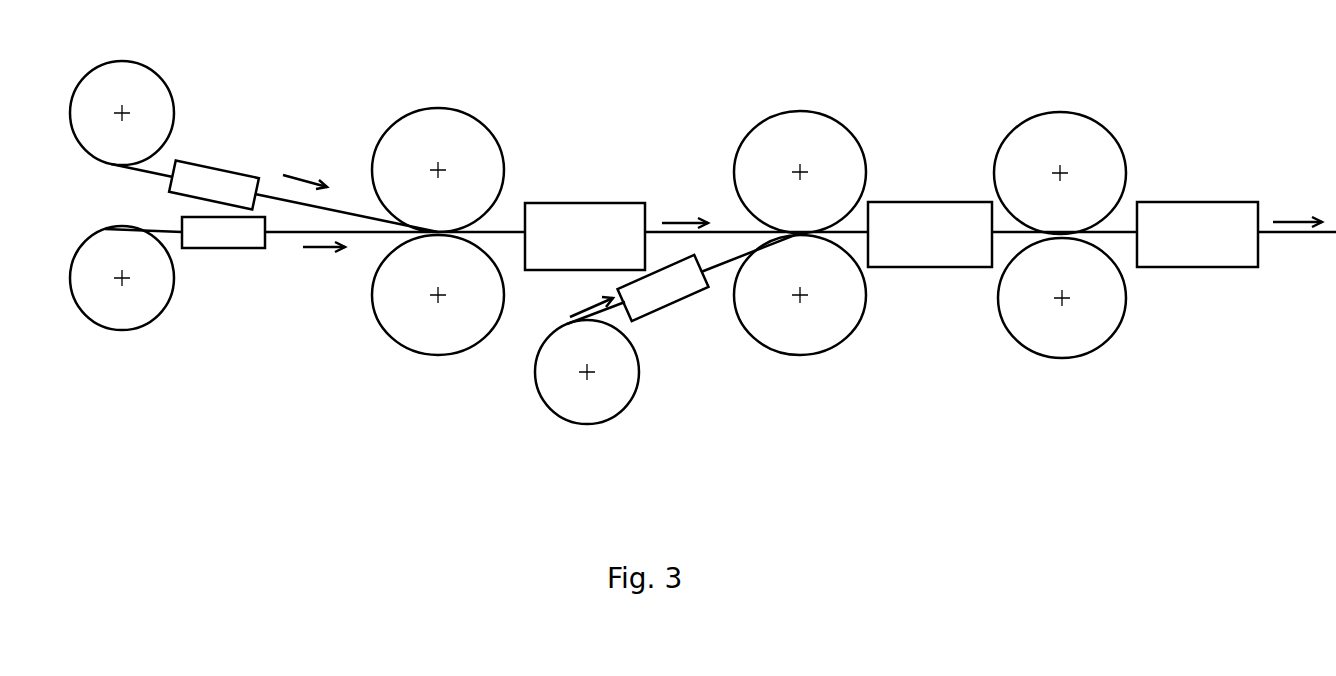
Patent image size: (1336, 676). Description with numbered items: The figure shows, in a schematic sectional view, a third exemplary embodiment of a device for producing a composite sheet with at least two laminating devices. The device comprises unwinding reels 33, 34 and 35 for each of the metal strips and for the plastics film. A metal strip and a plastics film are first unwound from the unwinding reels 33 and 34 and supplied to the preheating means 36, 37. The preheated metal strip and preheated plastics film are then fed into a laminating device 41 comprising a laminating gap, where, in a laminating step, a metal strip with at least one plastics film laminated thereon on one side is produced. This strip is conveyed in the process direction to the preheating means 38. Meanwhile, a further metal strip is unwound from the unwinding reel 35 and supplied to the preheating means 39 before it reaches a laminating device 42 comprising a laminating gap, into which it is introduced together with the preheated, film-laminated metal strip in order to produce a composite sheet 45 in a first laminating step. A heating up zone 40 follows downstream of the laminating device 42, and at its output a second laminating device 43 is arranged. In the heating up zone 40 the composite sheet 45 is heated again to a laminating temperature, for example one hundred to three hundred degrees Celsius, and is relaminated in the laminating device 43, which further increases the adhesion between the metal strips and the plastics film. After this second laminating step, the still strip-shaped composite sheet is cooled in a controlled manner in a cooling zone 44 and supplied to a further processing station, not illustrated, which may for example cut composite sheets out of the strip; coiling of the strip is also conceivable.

The unwinding reel 33 is at (133, 102).
The unwinding reel 34 is at (142, 293).
The unwinding reel 35 is at (600, 383).
The preheating means 36 is at (218, 175).
The preheating means 37 is at (222, 232).
The preheating means 38 is at (590, 238).
The preheating means 39 is at (670, 283).
The heating up zone 40 is at (943, 233).
The laminating device 41 is at (463, 98).
The laminating device 42 is at (808, 98).
The second laminating device 43 is at (1072, 98).
The cooling zone 44 is at (1210, 240).
The composite sheet 45 is at (1287, 240).